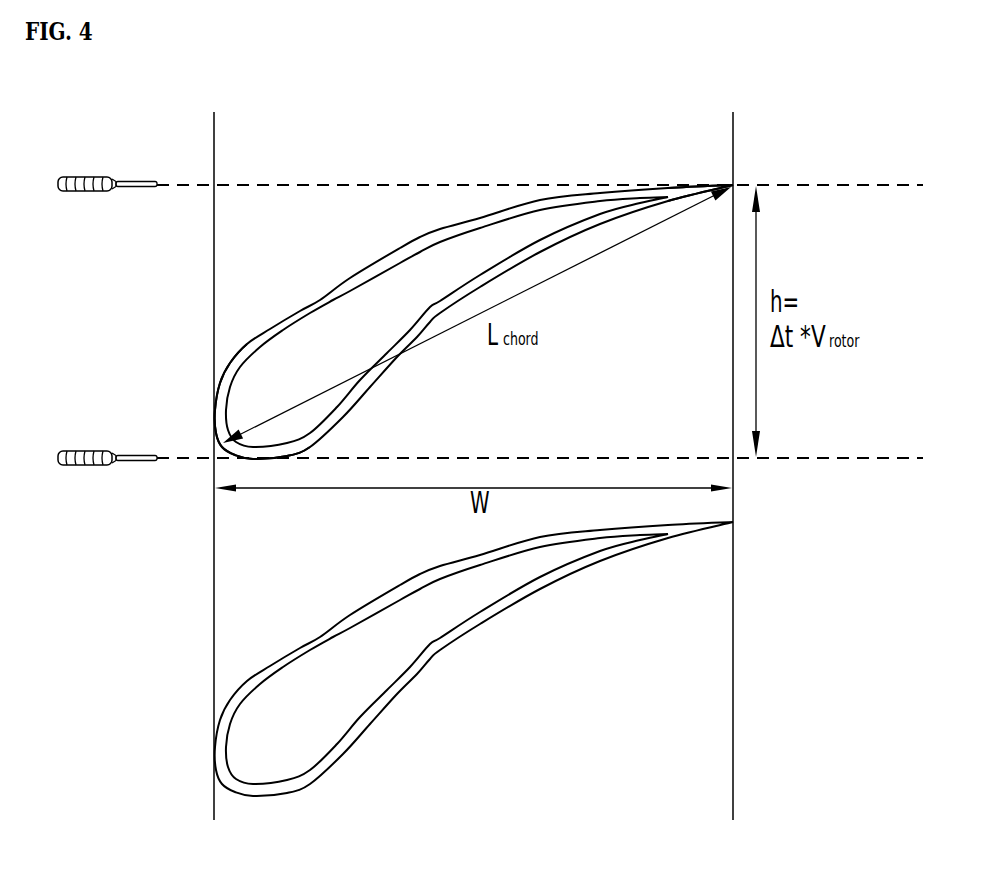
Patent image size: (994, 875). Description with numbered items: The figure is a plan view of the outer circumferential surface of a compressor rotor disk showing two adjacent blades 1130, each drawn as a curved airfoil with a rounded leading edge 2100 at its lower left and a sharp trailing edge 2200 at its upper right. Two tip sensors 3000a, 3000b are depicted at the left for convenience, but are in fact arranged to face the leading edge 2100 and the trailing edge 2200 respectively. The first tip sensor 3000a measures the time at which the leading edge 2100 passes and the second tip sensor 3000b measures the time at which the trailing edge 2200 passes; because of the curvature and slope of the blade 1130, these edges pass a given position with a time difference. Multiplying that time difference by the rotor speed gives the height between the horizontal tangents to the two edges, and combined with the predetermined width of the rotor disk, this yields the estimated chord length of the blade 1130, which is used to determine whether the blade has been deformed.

The blade 1130 is at (399, 290).
The leading edge 2100 is at (258, 460).
The trailing edge 2200 is at (705, 183).
The first tip sensor 3000a is at (85, 450).
The second tip sensor 3000b is at (85, 176).